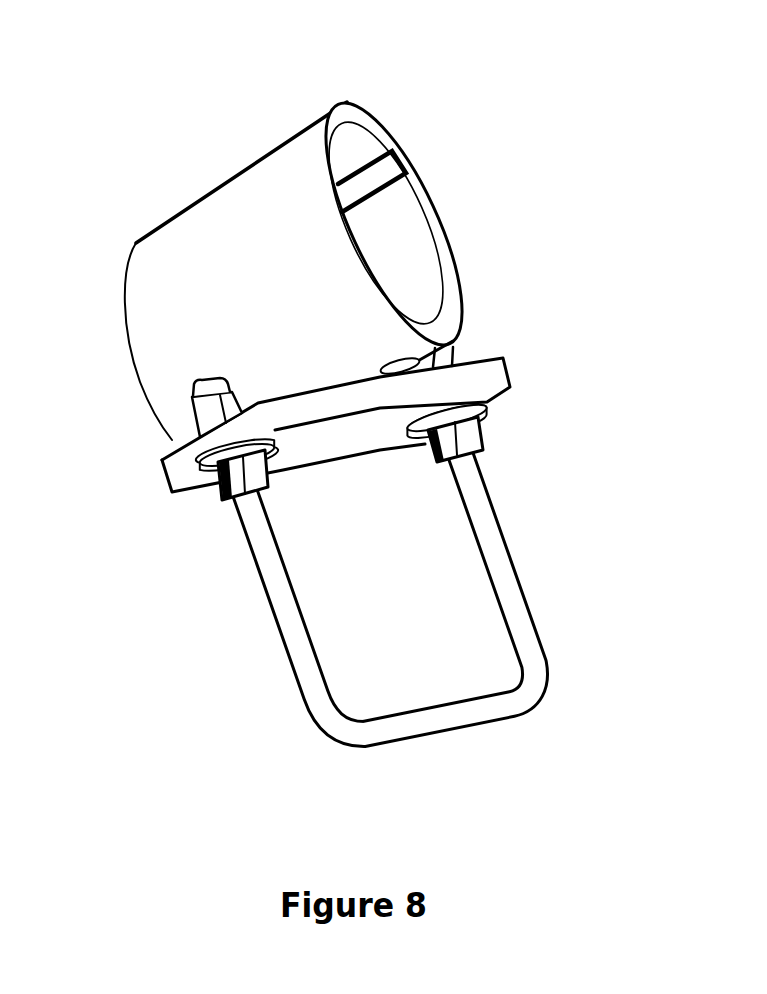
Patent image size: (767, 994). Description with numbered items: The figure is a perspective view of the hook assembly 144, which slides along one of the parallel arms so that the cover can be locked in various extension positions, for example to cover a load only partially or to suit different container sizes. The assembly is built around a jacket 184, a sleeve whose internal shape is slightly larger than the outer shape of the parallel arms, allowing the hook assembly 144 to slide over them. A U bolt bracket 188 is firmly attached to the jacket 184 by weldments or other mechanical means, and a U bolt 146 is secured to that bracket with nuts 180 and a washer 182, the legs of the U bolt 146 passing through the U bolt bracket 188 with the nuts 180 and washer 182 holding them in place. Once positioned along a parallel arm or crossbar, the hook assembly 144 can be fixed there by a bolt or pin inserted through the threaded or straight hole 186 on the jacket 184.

The hook assembly 144 is at (438, 377).
The U bolt 146 is at (508, 573).
The nuts 180 is at (483, 442).
The washer 182 is at (486, 412).
The jacket 184 is at (455, 258).
The threaded or straight hole 186 is at (450, 346).
The U bolt bracket 188 is at (473, 378).